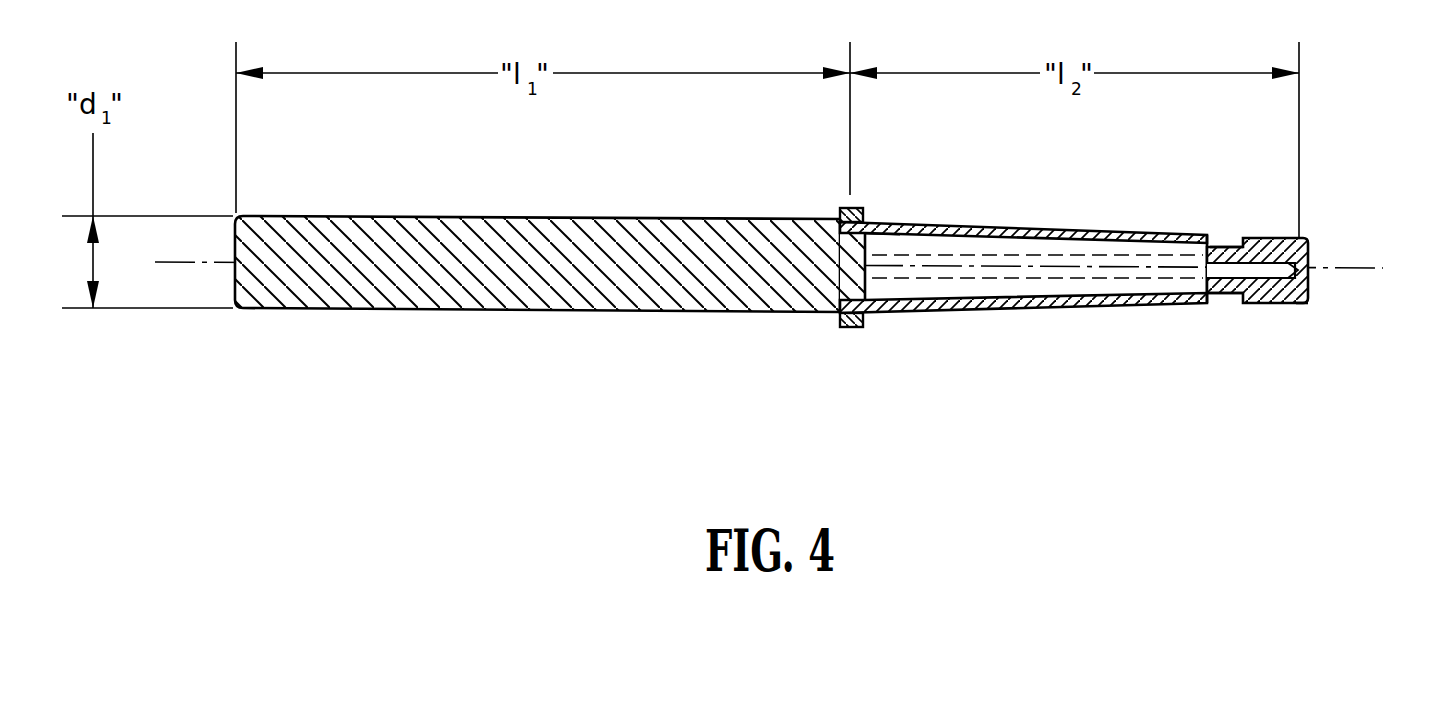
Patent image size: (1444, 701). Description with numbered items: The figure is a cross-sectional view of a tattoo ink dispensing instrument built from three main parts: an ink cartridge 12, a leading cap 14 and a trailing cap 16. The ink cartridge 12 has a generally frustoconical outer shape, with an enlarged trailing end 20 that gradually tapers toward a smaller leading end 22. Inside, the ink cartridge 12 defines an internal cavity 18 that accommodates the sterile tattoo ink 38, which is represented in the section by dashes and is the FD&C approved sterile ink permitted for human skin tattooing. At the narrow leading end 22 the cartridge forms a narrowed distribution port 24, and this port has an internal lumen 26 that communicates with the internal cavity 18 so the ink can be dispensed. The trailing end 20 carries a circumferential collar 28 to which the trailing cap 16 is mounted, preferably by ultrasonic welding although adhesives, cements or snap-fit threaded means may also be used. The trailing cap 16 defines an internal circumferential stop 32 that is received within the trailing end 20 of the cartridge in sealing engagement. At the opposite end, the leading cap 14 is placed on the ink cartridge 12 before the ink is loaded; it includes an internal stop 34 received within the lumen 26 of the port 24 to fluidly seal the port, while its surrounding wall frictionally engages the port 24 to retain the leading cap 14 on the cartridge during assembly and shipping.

The ink cartridge 12 is at (1047, 227).
The leading cap 14 is at (1277, 239).
The trailing cap 16 is at (717, 308).
The internal cavity 18 is at (1090, 273).
The trailing end 20 is at (866, 222).
The leading end 22 is at (1213, 295).
The distribution port 24 is at (1230, 247).
The internal lumen 26 is at (1308, 292).
The circumferential collar 28 is at (850, 328).
The internal circumferential stop 32 is at (866, 254).
The internal stop 34 is at (1308, 255).
The tattoo ink 38 is at (1008, 280).